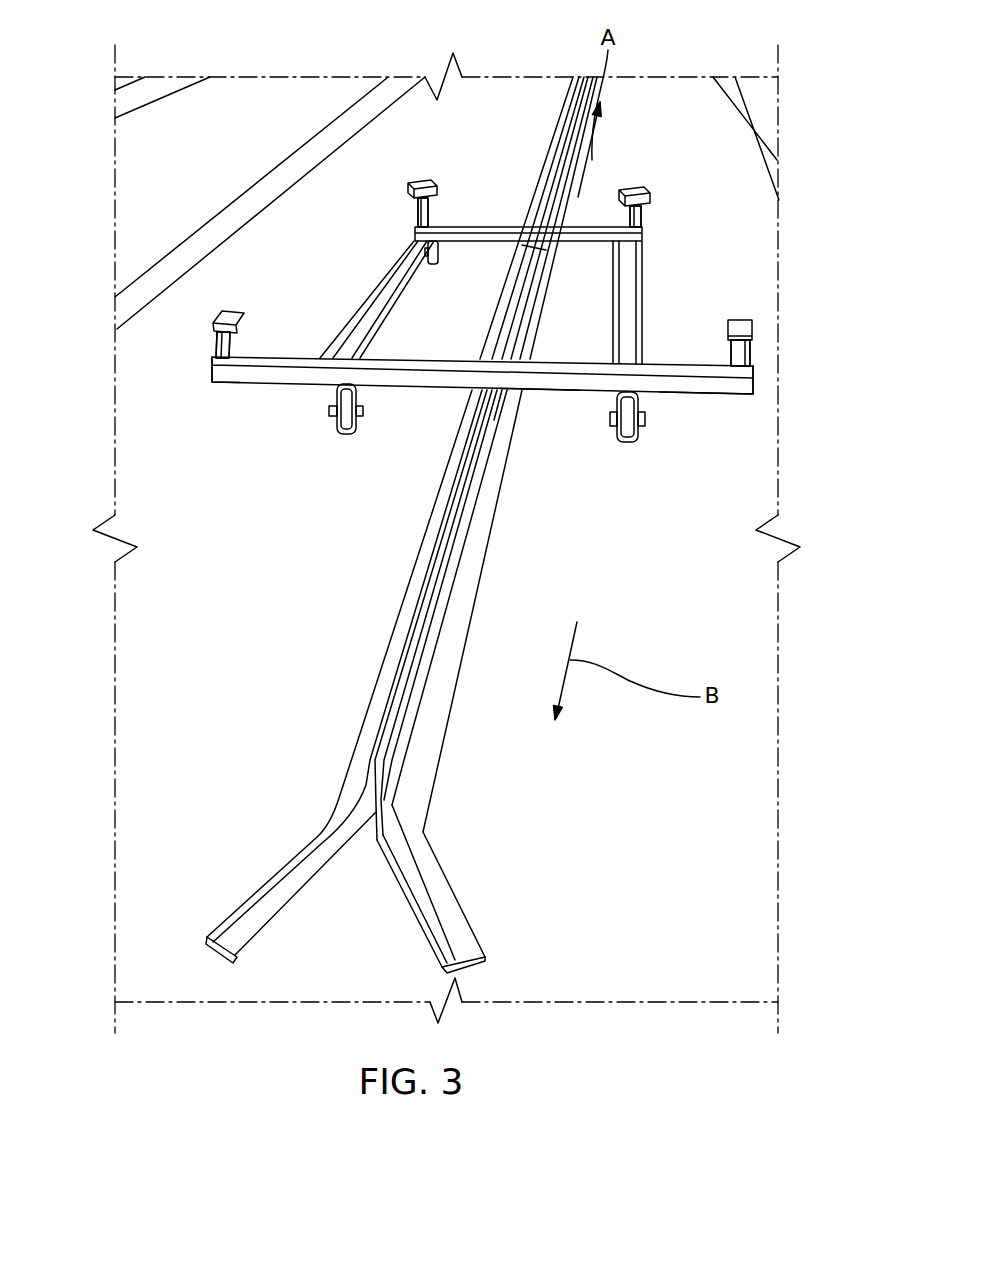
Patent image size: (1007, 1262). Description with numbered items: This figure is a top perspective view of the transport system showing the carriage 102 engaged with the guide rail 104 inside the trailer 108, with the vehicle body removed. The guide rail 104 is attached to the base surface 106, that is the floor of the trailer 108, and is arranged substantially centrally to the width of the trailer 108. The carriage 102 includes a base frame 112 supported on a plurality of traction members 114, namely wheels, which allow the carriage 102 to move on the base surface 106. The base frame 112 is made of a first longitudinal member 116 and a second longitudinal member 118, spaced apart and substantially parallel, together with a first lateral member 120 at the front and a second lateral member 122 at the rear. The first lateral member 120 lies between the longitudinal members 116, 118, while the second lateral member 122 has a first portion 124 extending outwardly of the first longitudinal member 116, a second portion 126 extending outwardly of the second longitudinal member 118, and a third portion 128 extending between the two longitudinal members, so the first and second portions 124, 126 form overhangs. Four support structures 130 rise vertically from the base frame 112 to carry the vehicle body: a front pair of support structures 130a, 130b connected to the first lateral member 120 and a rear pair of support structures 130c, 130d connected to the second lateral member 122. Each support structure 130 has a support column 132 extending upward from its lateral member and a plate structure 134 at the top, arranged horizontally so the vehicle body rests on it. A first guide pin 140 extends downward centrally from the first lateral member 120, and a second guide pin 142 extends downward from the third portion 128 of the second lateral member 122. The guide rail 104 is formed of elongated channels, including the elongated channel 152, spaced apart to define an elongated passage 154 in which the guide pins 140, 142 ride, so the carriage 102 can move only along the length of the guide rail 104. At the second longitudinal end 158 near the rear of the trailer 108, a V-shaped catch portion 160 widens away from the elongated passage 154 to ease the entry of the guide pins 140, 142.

The carriage 102 is at (690, 398).
The guide rail 104 is at (465, 613).
The base surface 106 is at (176, 705).
The trailer 108 is at (227, 137).
The base frame 112 is at (652, 294).
The traction members 114 is at (433, 265).
The first longitudinal member 116 is at (647, 275).
The second longitudinal member 118 is at (368, 317).
The first lateral member 120 is at (480, 220).
The second lateral member 122 is at (411, 384).
The first portion 124 is at (722, 396).
The second portion 126 is at (225, 378).
The third portion 128 is at (542, 391).
The support structures 130 is at (408, 200).
The support structure 130a is at (641, 192).
The support structure 130b is at (430, 182).
The support structure 130c is at (745, 370).
The support structure 130d is at (218, 358).
The support column 132 is at (420, 212).
The plate structure 134 is at (418, 183).
The first guide pin 140 is at (541, 247).
The second guide pin 142 is at (492, 394).
The elongated channel 152 is at (360, 773).
The elongated passage 154 is at (385, 718).
The second longitudinal end 158 is at (425, 832).
The catch portion 160 is at (458, 938).